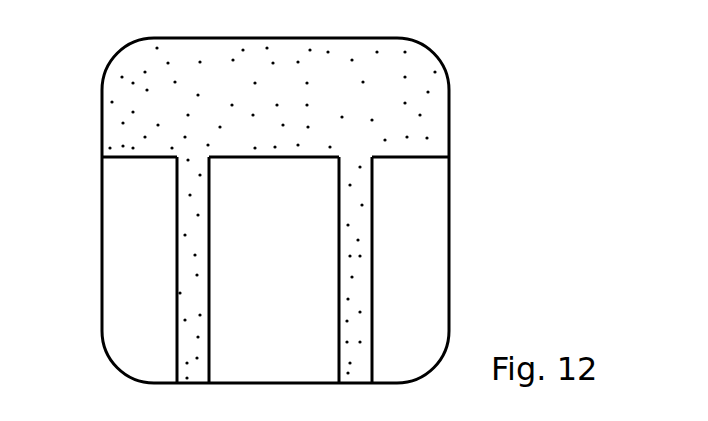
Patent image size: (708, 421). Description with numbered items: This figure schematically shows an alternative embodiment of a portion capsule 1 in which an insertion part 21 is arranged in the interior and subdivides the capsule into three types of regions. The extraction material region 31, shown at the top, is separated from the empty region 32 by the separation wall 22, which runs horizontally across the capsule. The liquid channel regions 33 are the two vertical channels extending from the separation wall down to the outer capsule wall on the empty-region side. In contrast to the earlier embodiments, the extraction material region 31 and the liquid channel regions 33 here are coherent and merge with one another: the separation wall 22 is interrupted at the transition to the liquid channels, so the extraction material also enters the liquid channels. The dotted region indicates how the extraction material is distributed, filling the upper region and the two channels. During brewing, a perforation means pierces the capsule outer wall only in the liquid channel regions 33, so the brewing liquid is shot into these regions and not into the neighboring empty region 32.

The capsule 1 is at (100, 45).
The insertion part 21 is at (375, 253).
The separation wall 22 is at (272, 157).
The extraction material region 31 is at (394, 122).
The empty region 32 is at (415, 314).
The liquid channel regions 33 is at (190, 283).